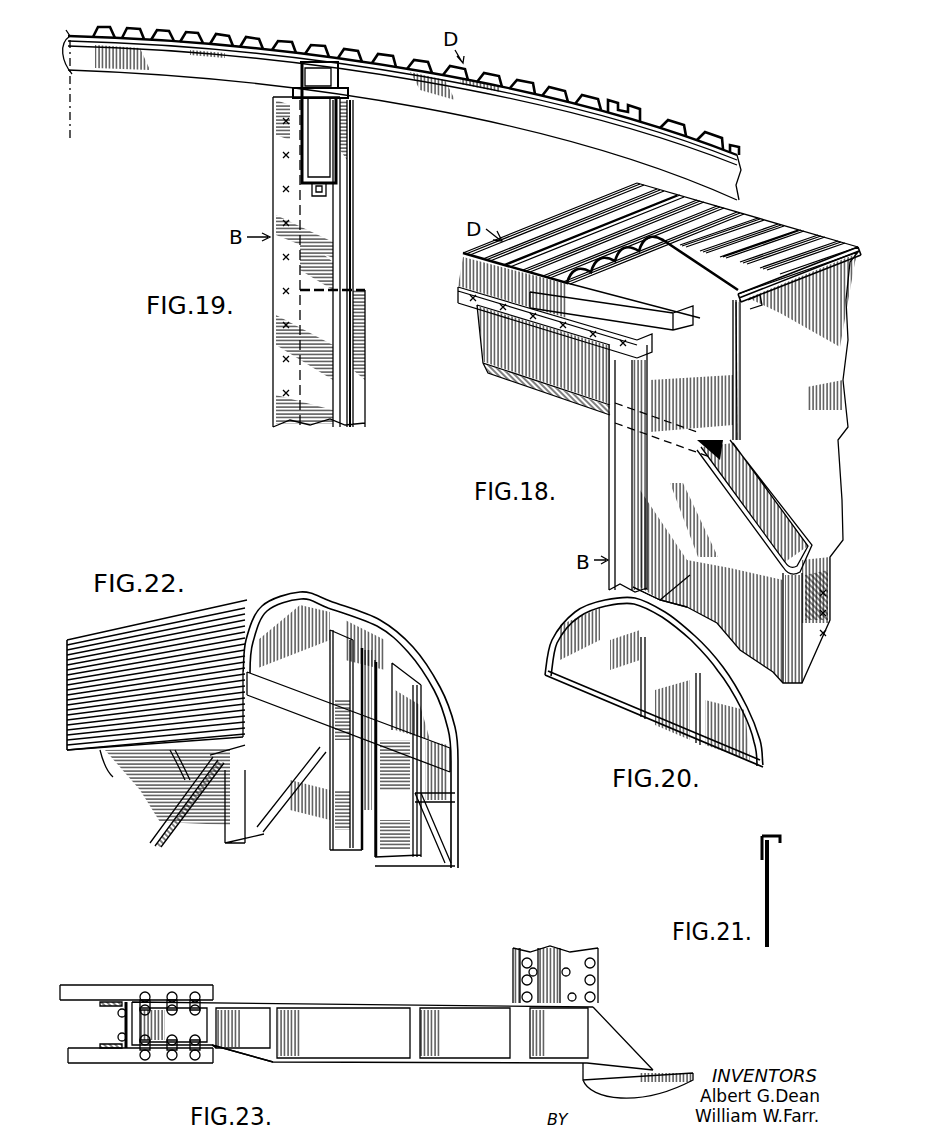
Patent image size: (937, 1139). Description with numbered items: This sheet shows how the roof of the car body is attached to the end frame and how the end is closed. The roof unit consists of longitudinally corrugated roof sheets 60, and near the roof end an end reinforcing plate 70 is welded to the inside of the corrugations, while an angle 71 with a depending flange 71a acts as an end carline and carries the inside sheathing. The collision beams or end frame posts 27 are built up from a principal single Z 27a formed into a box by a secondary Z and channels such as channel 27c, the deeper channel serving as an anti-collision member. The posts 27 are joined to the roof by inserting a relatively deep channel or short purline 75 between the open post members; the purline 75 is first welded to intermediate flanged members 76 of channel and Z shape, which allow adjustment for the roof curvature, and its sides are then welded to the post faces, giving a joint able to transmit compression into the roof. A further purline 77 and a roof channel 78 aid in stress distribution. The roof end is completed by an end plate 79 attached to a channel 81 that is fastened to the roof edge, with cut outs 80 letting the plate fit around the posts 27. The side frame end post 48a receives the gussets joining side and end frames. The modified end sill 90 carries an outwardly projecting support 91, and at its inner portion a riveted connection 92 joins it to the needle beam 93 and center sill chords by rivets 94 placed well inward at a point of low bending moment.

In FIG. 19, the roof sheets 60 is at (502, 86).
In FIG. 18, the roof sheets 60 is at (768, 222).
In FIG. 22, the roof sheets 60 is at (232, 604).
In FIG. 19, the end reinforcing plate 70 is at (536, 102).
In FIG. 18, the end reinforcing plate 70 is at (700, 258).
In FIG. 22, the end reinforcing plate 70 is at (437, 778).
In FIG. 19, the angle 71 is at (182, 72).
In FIG. 18, the angle 71 is at (742, 326).
In FIG. 18, the depending flange 71a is at (766, 320).
In FIG. 19, the channel 75 is at (302, 160).
In FIG. 18, the channel 75 is at (480, 340).
In FIG. 19, the intermediate flanged members 76 is at (300, 80).
In FIG. 18, the intermediate flanged members 76 is at (625, 312).
In FIG. 19, the purline 77 is at (618, 104).
In FIG. 19, the roof channel 78 is at (74, 74).
In FIG. 18, the end plate 79 is at (806, 388).
In FIG. 20, the end plate 79 is at (604, 697).
In FIG. 22, the end plate 79 is at (330, 612).
In FIG. 21, the end plate 79 is at (770, 889).
In FIG. 20, the cut outs 80 is at (697, 740).
In FIG. 18, the channel 81 is at (790, 257).
In FIG. 21, the channel 81 is at (781, 842).
In FIG. 22, the collision beams 27 is at (385, 857).
In FIG. 18, the single Z 27a is at (703, 586).
In FIG. 18, the channel 27c is at (786, 500).
In FIG. 22, the end post 48a is at (232, 838).
In FIG. 23, the end sill 90 is at (447, 1047).
In FIG. 23, the outwardly projecting support 91 is at (670, 1067).
In FIG. 23, the riveted bracket 92 is at (596, 973).
In FIG. 23, the needle beam 93 is at (120, 1024).
In FIG. 23, the rivets 94 is at (195, 992).